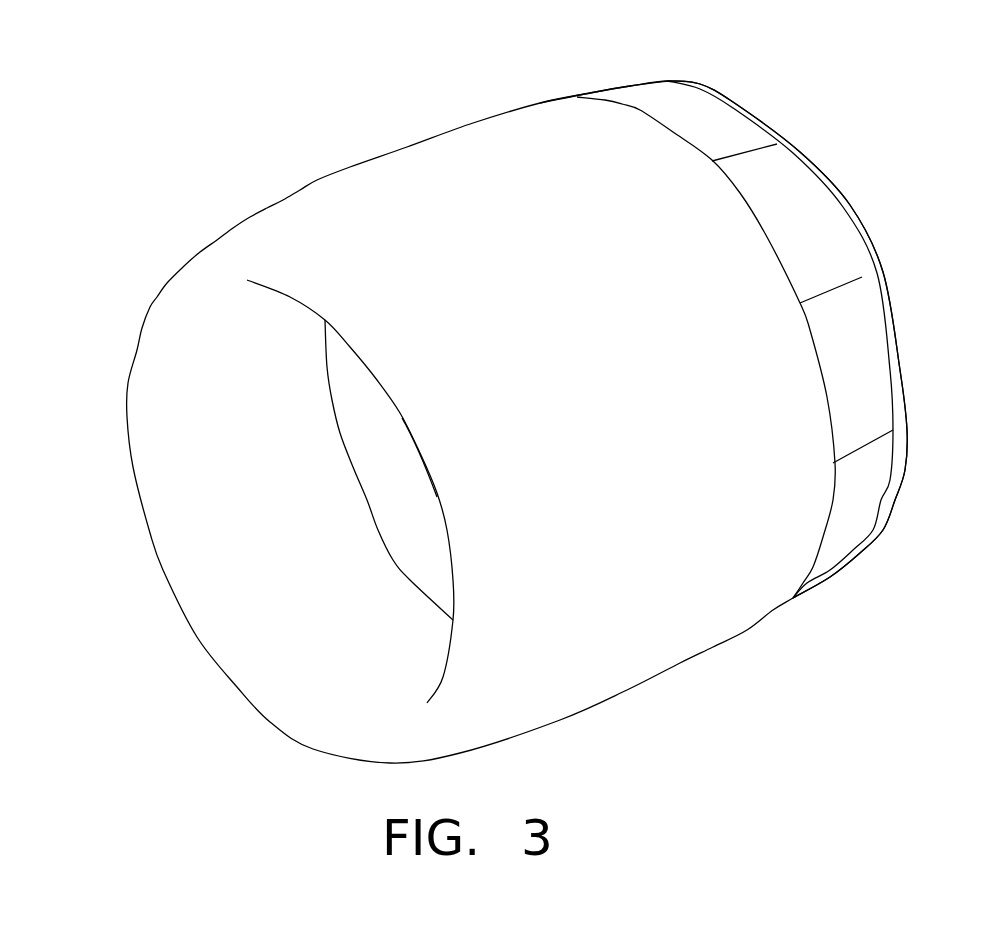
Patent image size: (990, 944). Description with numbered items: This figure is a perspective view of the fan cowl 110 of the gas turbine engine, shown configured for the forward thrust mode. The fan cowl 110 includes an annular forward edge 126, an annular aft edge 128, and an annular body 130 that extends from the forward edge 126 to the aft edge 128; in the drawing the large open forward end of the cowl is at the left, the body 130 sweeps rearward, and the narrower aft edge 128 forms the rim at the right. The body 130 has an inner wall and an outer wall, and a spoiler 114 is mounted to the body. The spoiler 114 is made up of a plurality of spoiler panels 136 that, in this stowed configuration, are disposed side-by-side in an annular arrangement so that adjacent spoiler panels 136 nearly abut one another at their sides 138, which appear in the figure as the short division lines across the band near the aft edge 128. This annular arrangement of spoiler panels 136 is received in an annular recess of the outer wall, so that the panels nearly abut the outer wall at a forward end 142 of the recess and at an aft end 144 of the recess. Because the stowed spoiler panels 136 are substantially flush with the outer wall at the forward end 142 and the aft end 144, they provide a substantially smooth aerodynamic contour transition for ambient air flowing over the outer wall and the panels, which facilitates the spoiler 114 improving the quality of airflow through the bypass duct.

The fan cowl 110 is at (190, 125).
The spoiler 114 is at (675, 107).
The annular forward edge 126 is at (267, 720).
The annular aft edge 128 is at (803, 155).
The annular body 130 is at (445, 178).
The spoiler panels 136 is at (847, 317).
The sides 138 is at (743, 150).
The forward end of recess 142 is at (767, 237).
The aft end of recess 144 is at (823, 202).